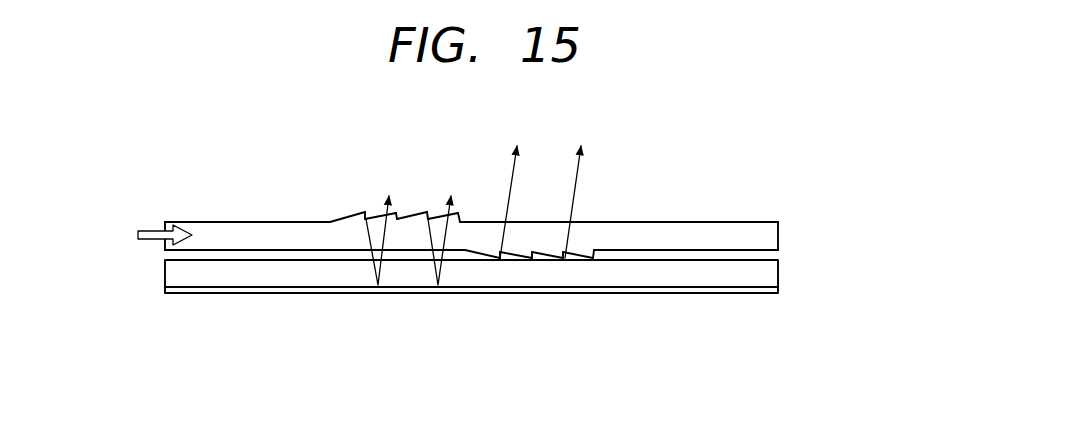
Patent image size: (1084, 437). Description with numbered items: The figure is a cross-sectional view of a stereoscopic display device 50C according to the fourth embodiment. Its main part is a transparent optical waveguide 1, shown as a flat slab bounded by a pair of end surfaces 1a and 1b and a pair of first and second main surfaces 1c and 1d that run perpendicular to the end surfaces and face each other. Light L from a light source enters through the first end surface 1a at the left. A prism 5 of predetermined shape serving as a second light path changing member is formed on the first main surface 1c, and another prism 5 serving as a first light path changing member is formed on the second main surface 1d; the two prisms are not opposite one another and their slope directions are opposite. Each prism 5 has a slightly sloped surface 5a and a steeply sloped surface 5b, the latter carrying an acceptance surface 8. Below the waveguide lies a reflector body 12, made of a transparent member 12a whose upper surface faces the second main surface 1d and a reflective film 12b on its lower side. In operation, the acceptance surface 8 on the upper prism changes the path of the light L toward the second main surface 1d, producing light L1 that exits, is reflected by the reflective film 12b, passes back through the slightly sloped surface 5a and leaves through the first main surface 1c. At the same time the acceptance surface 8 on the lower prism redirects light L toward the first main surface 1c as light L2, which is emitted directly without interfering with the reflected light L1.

The stereoscopic display device 50C is at (652, 165).
The optical waveguide 1 is at (777, 216).
The first end surface 1a is at (163, 245).
The second end surface 1b is at (780, 228).
The first main surface 1c is at (252, 222).
The second main surface 1d is at (307, 250).
The prism 5 is at (343, 212).
The slightly sloped surface 5a is at (378, 208).
The steeply sloped surface 5b is at (463, 208).
The acceptance surface 8 is at (427, 213).
The reflector body 12 is at (888, 248).
The transparent member 12a is at (768, 270).
The reflective film 12b is at (777, 290).
The light L is at (160, 227).
The light L1 is at (390, 233).
The light L2 is at (580, 182).